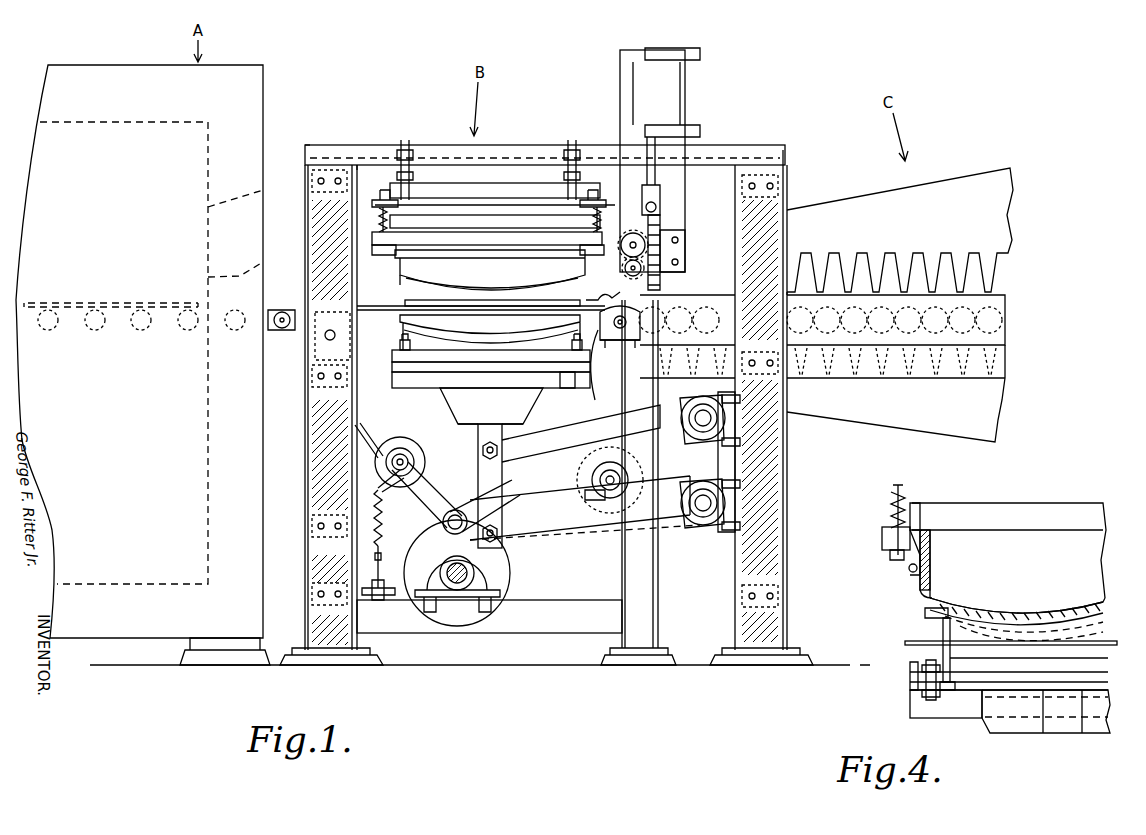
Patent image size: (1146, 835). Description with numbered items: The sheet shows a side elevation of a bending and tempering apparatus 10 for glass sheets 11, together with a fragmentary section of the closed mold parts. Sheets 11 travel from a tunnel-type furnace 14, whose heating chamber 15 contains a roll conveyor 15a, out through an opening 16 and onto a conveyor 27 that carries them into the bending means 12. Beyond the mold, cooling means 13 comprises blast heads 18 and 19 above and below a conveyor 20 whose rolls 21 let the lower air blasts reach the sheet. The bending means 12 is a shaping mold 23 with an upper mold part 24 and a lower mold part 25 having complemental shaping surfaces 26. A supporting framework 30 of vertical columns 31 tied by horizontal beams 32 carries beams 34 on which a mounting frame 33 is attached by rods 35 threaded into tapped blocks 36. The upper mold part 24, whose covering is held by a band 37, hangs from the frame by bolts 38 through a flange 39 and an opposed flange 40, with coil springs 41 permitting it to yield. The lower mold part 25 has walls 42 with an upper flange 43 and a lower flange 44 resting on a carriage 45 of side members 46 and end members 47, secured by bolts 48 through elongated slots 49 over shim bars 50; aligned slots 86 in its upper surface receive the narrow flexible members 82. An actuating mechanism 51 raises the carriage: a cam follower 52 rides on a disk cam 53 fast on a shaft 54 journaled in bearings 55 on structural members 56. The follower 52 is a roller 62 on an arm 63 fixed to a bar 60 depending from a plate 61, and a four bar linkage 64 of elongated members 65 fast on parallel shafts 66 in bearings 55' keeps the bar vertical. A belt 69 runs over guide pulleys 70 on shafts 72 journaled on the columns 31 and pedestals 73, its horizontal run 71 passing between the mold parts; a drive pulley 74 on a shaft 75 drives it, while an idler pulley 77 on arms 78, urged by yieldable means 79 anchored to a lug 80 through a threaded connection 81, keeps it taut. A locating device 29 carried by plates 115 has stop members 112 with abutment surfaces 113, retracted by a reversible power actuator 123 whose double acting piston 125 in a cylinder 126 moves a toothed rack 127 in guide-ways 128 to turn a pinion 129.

In FIG. 1, the bending and tempering apparatus 10 is at (395, 101).
In FIG. 1, the glass sheets 11 is at (135, 300).
In FIG. 4, the glass sheets 11 is at (962, 608).
In FIG. 1, the bending means 12 is at (503, 131).
In FIG. 1, the cooling means 13 is at (874, 188).
In FIG. 1, the tunnel-type furnace 14 is at (260, 131).
In FIG. 1, the heating chamber 15 is at (263, 190).
In FIG. 1, the roll conveyor 15a is at (186, 330).
In FIG. 1, the opening 16 is at (263, 262).
In FIG. 1, the upper blast head 18 is at (935, 205).
In FIG. 1, the lower blast head 19 is at (905, 412).
In FIG. 1, the conveyor 20 is at (1008, 307).
In FIG. 1, the rolls 21 is at (1000, 331).
In FIG. 1, the shaping mold 23 is at (393, 272).
In FIG. 1, the upper mold part 24 is at (486, 270).
In FIG. 4, the upper mold part 24 is at (940, 582).
In FIG. 1, the lower mold part 25 is at (420, 330).
In FIG. 4, the lower mold part 25 is at (1005, 665).
In FIG. 1, the shaping surfaces 26 is at (510, 298).
In FIG. 4, the shaping surfaces 26 is at (1010, 618).
In FIG. 1, the conveyor 27 is at (383, 300).
In FIG. 1, the locating device 29 is at (673, 197).
In FIG. 1, the supporting framework 30 is at (339, 141).
In FIG. 1, the vertical columns 31 is at (318, 458).
In FIG. 1, the horizontal beams 32 is at (788, 168).
In FIG. 1, the mounting frame 33 is at (507, 172).
In FIG. 4, the mounting frame 33 is at (991, 510).
In FIG. 1, the beams 34 is at (364, 156).
In FIG. 1, the rods 35 is at (412, 172).
In FIG. 1, the tapped blocks 36 is at (410, 160).
In FIG. 4, the band 37 is at (909, 569).
In FIG. 1, the bolts 38 is at (398, 248).
In FIG. 4, the bolts 38 is at (890, 554).
In FIG. 1, the flange 39 is at (598, 242).
In FIG. 4, the flange 39 is at (882, 538).
In FIG. 1, the flange 40 is at (383, 198).
In FIG. 1, the coil springs 41 is at (378, 210).
In FIG. 4, the coil springs 41 is at (890, 510).
In FIG. 4, the walls 42 is at (952, 659).
In FIG. 4, the upper flange 43 is at (925, 614).
In FIG. 1, the lower flange 44 is at (530, 364).
In FIG. 4, the lower flange 44 is at (952, 676).
In FIG. 1, the carriage 45 is at (441, 400).
In FIG. 4, the carriage 45 is at (1029, 731).
In FIG. 1, the side members 46 is at (590, 366).
In FIG. 4, the side members 46 is at (908, 668).
In FIG. 1, the end members 47 is at (548, 388).
In FIG. 4, the end members 47 is at (912, 708).
In FIG. 1, the bolts 48 is at (412, 349).
In FIG. 4, the elongated slots 49 is at (920, 683).
In FIG. 1, the shim bars 50 is at (572, 374).
In FIG. 4, the shim bars 50 is at (946, 690).
In FIG. 1, the actuating mechanism 51 is at (445, 504).
In FIG. 1, the cam follower 52 is at (471, 488).
In FIG. 1, the disk cam 53 is at (490, 562).
In FIG. 1, the shaft 54 is at (468, 573).
In FIG. 1, the bearings 55 is at (473, 601).
In FIG. 1, the bearings 55' is at (749, 462).
In FIG. 1, the structural members 56 is at (548, 622).
In FIG. 1, the bar 60 is at (488, 440).
In FIG. 4, the bar 60 is at (1065, 718).
In FIG. 1, the plate 61 is at (462, 410).
In FIG. 4, the plate 61 is at (1092, 720).
In FIG. 1, the roller 62 is at (443, 522).
In FIG. 1, the arm 63 is at (470, 505).
In FIG. 1, the four bar linkage 64 is at (593, 541).
In FIG. 1, the elongated members 65 is at (553, 435).
In FIG. 1, the parallel shafts 66 is at (708, 440).
In FIG. 1, the belt 69 is at (381, 437).
In FIG. 1, the guide pulleys 70 is at (335, 312).
In FIG. 1, the horizontal run 71 is at (530, 334).
In FIG. 1, the shafts 72 is at (350, 348).
In FIG. 1, the pedestals 73 is at (655, 580).
In FIG. 1, the drive pulley 74 is at (586, 480).
In FIG. 1, the shaft 75 is at (614, 480).
In FIG. 1, the idler pulley 77 is at (405, 450).
In FIG. 1, the arms 78 is at (394, 488).
In FIG. 1, the yieldable means 79 is at (380, 523).
In FIG. 1, the lug 80 is at (380, 590).
In FIG. 1, the threaded connection 81 is at (386, 567).
In FIG. 4, the flexible members 82 is at (1010, 645).
In FIG. 4, the slots 86 is at (943, 630).
In FIG. 1, the stop members 112 is at (602, 289).
In FIG. 1, the abutment surfaces 113 is at (588, 302).
In FIG. 1, the plates 115 is at (676, 112).
In FIG. 1, the reversible power actuator 123 is at (690, 99).
In FIG. 1, the double acting piston 125 is at (650, 108).
In FIG. 1, the cylinder 126 is at (648, 88).
In FIG. 1, the toothed rack 127 is at (664, 216).
In FIG. 1, the guide-ways 128 is at (664, 238).
In FIG. 1, the pinion 129 is at (628, 256).